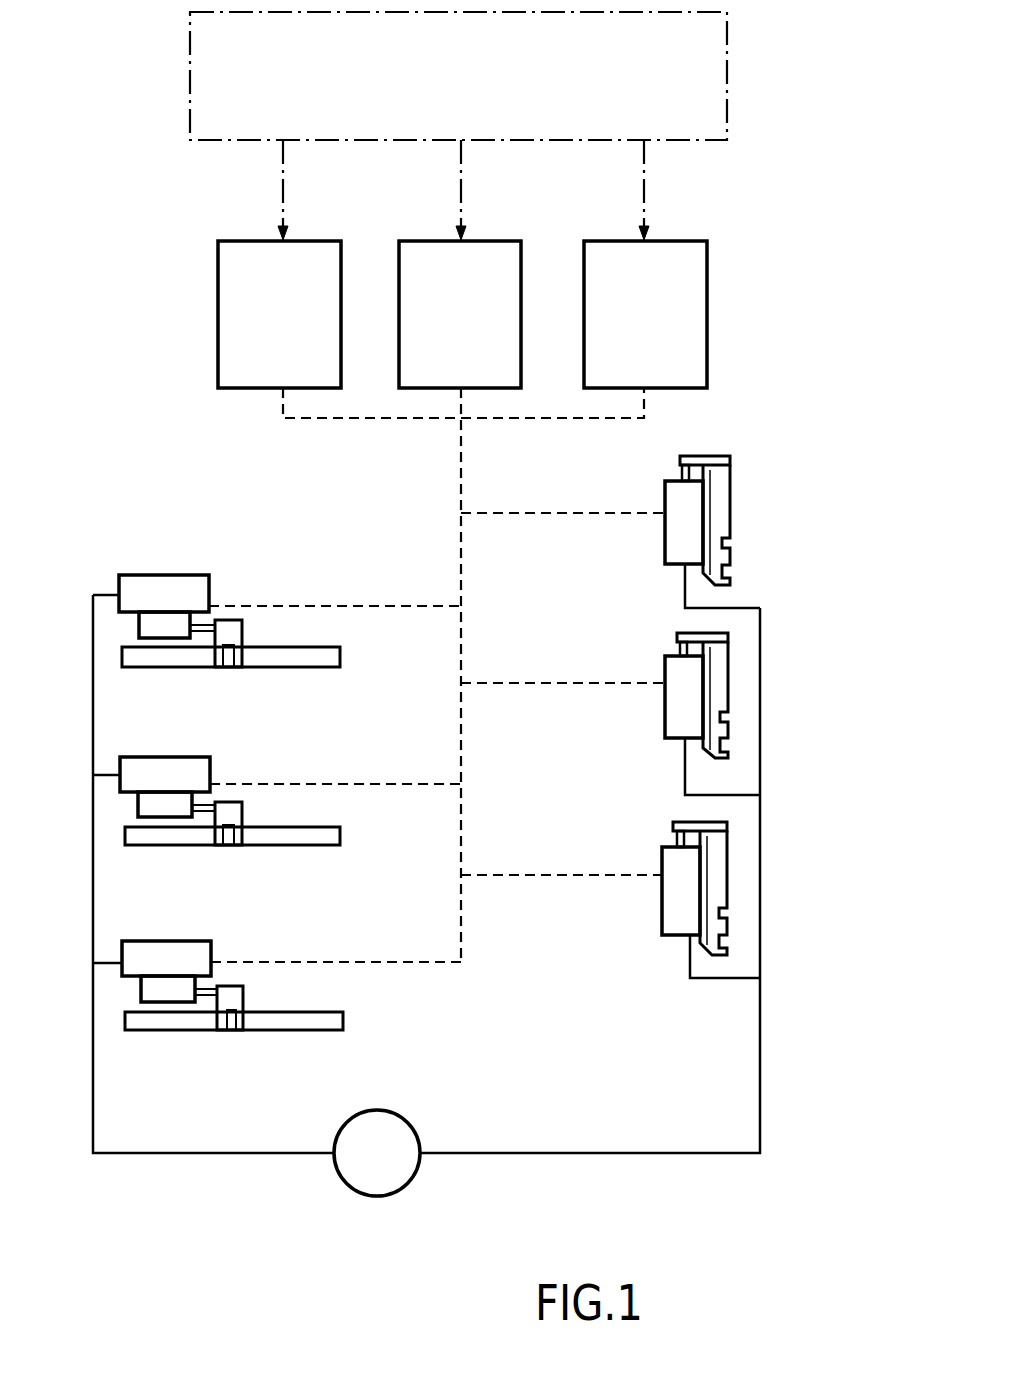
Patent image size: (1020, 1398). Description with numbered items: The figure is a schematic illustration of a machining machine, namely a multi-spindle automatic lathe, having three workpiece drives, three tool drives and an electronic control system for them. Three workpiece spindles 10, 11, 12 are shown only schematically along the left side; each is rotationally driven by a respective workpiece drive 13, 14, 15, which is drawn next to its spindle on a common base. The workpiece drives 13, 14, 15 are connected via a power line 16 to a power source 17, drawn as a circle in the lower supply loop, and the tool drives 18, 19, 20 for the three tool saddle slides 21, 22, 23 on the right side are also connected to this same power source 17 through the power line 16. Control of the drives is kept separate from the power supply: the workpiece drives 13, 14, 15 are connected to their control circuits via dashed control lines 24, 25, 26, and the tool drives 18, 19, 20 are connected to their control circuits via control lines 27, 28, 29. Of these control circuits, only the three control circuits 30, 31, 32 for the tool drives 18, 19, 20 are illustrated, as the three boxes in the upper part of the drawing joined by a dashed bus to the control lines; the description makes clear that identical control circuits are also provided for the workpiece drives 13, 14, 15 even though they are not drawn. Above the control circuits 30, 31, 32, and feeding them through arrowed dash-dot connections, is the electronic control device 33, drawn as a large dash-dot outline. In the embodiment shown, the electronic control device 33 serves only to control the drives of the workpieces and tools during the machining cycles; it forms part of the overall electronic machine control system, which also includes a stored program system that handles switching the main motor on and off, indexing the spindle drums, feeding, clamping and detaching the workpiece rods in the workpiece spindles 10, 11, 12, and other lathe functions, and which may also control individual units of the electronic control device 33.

The workpiece spindle 10 is at (135, 951).
The workpiece spindle 11 is at (130, 762).
The workpiece spindle 12 is at (135, 583).
The workpiece drive 13 is at (238, 995).
The workpiece drive 14 is at (236, 811).
The workpiece drive 15 is at (240, 632).
The power line 16 is at (697, 1154).
The power source 17 is at (358, 1185).
The tool drive 18 is at (717, 858).
The tool drive 19 is at (720, 675).
The tool drive 20 is at (720, 500).
The tool saddle slide 21 is at (668, 915).
The tool saddle slide 22 is at (677, 715).
The tool saddle slide 23 is at (680, 535).
The control line 24 is at (412, 962).
The control line 25 is at (412, 784).
The control line 26 is at (390, 604).
The control line 27 is at (573, 878).
The control line 28 is at (580, 688).
The control line 29 is at (577, 518).
The control circuit 30 is at (240, 256).
The control circuit 31 is at (415, 256).
The control circuit 32 is at (603, 256).
The electronic control device 33 is at (470, 116).